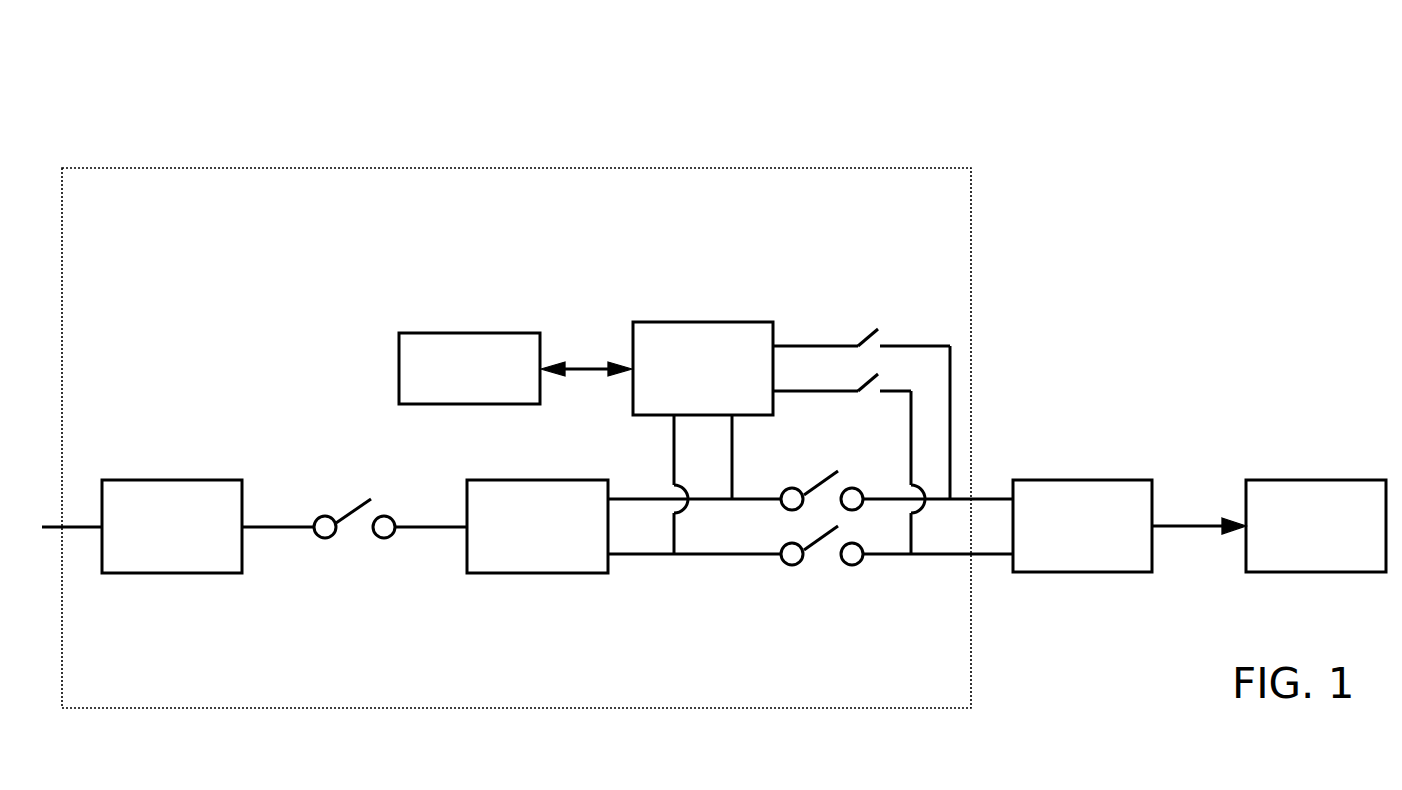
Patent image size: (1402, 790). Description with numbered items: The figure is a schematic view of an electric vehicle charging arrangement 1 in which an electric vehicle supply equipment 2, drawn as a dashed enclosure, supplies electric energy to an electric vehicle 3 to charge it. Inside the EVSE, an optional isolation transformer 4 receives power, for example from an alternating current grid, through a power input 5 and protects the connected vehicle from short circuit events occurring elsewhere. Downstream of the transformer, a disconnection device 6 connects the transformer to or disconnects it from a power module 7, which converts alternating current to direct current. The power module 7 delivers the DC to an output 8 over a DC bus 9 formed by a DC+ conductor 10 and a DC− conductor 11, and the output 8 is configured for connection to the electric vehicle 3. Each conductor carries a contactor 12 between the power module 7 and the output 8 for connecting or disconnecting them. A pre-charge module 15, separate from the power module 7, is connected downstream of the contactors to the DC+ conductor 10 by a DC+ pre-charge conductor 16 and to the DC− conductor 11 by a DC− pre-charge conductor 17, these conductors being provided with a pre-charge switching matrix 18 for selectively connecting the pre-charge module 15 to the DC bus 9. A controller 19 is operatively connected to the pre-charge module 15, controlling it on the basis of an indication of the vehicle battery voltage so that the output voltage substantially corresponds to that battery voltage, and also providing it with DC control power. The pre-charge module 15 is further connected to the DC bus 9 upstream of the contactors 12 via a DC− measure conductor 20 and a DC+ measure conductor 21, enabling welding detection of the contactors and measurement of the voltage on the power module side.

The electric vehicle charging arrangement 1 is at (78, 127).
The electric vehicle supply equipment 2 is at (726, 168).
The electric vehicle 3 is at (1308, 538).
The isolation transformer 4 is at (164, 541).
The power input 5 is at (46, 526).
The disconnection device 6 is at (361, 503).
The power module 7 is at (530, 541).
The output 8 is at (1076, 538).
The DC bus 9 is at (720, 501).
The DC+ conductor 10 is at (636, 498).
The DC− conductor 11 is at (630, 557).
The contactor 12 is at (824, 481).
The pre-charge module 15 is at (690, 383).
The DC+ pre-charge conductor 16 is at (820, 345).
The DC− pre-charge conductor 17 is at (792, 391).
The pre-charge switching matrix 18 is at (880, 384).
The controller 19 is at (457, 383).
The DC− measure conductor 20 is at (674, 435).
The DC+ measure conductor 21 is at (733, 441).